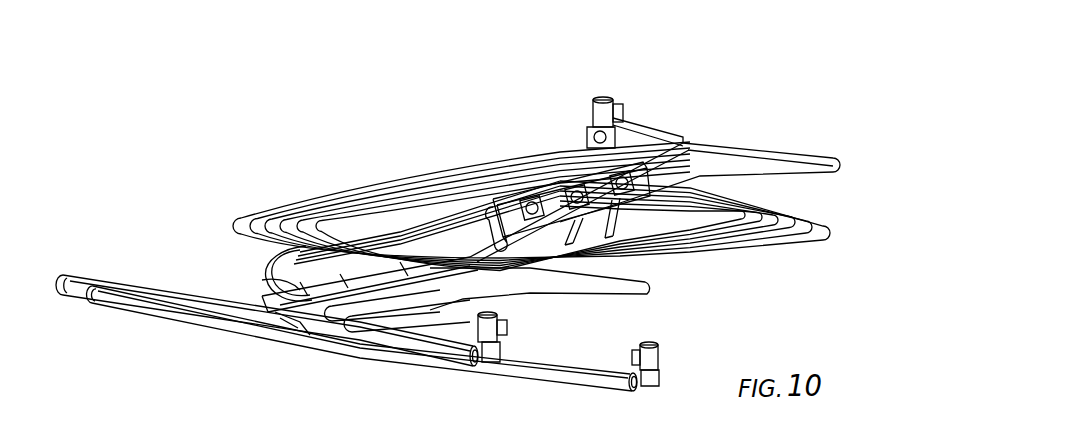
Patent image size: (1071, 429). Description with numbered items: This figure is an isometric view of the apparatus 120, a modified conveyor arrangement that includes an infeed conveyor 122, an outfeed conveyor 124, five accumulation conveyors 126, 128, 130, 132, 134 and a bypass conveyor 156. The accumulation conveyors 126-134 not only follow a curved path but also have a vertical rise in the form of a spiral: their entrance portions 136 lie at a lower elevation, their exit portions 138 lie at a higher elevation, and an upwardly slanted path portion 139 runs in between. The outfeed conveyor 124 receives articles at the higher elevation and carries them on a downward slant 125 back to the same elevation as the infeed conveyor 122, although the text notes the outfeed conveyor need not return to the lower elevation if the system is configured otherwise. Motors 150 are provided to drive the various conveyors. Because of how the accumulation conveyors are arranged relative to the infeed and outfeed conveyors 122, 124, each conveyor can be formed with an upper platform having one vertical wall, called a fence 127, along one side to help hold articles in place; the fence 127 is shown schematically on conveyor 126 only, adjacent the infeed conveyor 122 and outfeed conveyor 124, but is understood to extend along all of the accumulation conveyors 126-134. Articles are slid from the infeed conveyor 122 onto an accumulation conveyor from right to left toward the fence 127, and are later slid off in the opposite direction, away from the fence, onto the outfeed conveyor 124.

The apparatus 120 is at (748, 92).
The infeed conveyor 122 is at (73, 278).
The outfeed conveyor 124 is at (770, 150).
The downward slant 125 is at (730, 183).
The accumulation conveyor 126 is at (245, 215).
The fence 127 is at (262, 250).
The accumulation conveyor 128 is at (287, 212).
The accumulation conveyor 130 is at (323, 212).
The accumulation conveyor 132 is at (371, 212).
The accumulation conveyor 134 is at (417, 207).
The entrance portions 136 is at (262, 282).
The exit portions 138 is at (541, 186).
The upwardly slanted path portion 139 is at (700, 262).
The motors 150 is at (683, 143).
The bypass conveyor 156 is at (300, 324).